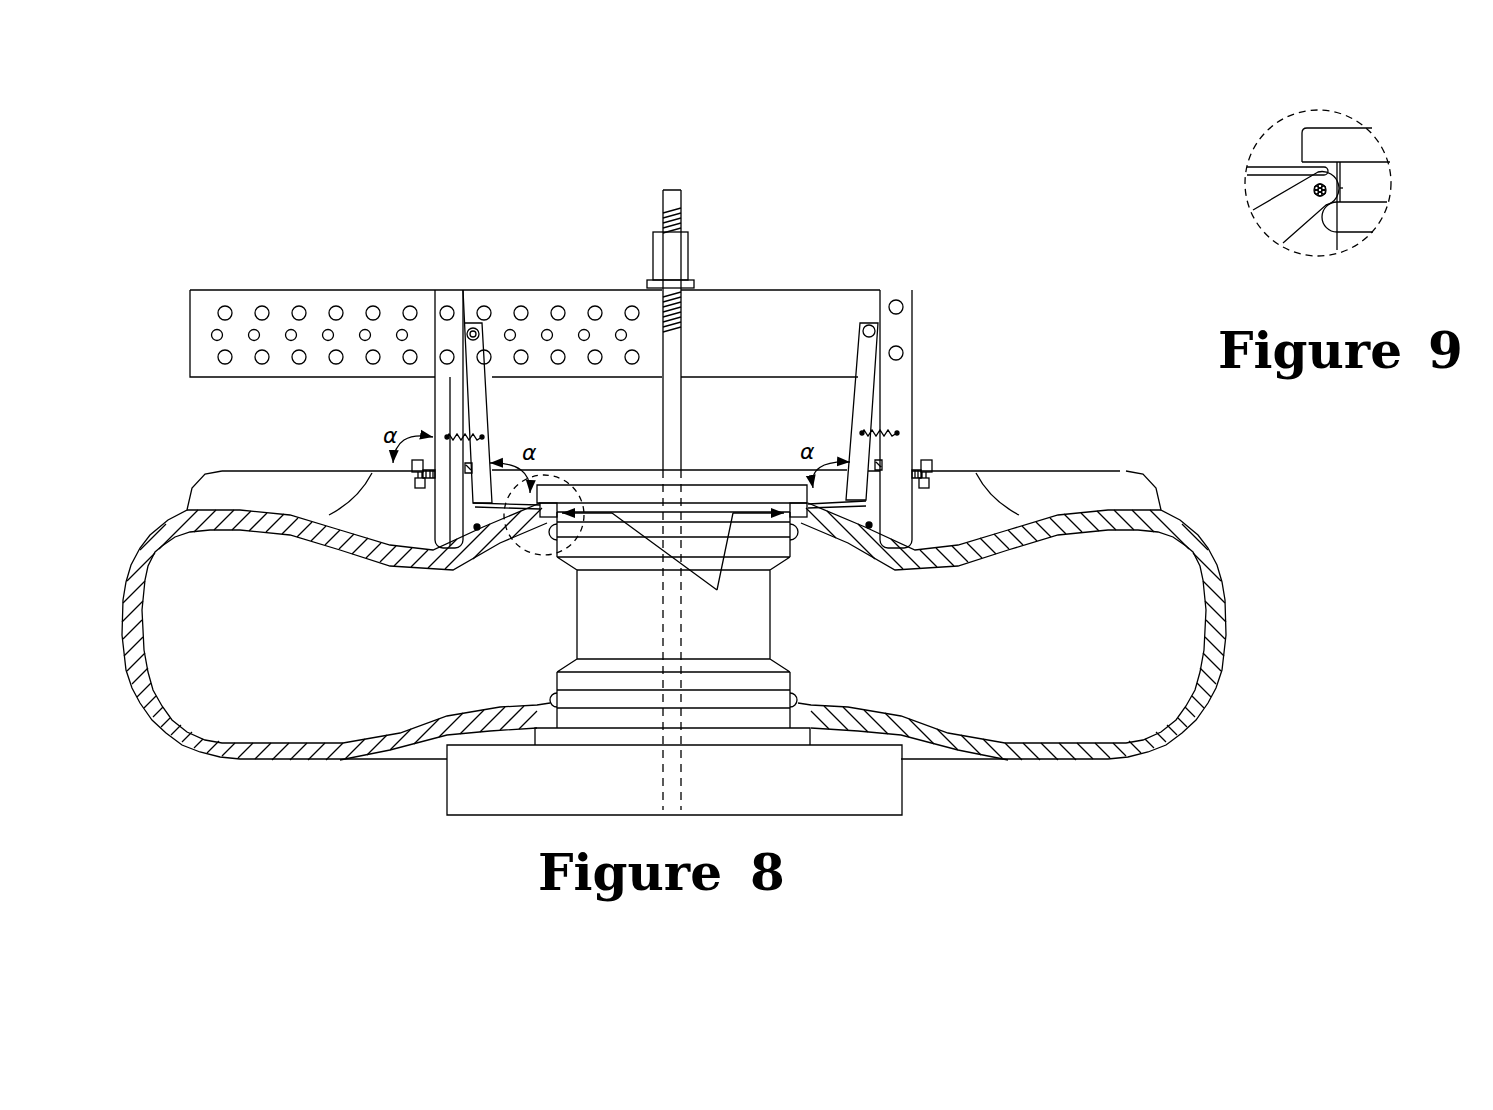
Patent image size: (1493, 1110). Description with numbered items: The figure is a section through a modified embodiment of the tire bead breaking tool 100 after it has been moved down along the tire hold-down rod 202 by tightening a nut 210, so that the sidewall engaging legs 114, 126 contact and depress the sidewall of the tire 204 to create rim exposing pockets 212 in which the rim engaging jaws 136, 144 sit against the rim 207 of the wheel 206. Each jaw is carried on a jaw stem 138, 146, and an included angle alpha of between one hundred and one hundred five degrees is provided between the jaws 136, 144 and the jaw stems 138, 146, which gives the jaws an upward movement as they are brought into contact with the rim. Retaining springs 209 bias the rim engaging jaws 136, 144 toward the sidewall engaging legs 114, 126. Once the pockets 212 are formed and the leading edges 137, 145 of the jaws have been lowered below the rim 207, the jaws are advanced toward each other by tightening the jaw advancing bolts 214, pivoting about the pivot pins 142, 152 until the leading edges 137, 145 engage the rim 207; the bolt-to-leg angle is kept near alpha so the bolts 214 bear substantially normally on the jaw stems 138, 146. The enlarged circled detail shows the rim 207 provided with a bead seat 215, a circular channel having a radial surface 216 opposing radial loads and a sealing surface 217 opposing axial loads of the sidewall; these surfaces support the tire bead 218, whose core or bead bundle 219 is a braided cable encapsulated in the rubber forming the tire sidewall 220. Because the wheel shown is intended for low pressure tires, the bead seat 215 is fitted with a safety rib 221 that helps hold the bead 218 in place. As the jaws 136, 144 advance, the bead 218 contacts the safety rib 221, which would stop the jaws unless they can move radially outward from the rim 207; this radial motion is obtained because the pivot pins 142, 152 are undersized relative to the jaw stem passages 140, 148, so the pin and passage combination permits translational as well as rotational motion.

In FIG. 8, the tire bead breaking tool 100 is at (587, 258).
In FIG. 8, the sidewall engaging leg 114 is at (891, 422).
In FIG. 8, the sidewall engaging leg 126 is at (443, 405).
In FIG. 8, the rim engaging jaw 136 is at (843, 517).
In FIG. 8, the leading edge 137 is at (773, 470).
In FIG. 8, the jaw stem 138 is at (868, 397).
In FIG. 8, the jaw stem passage 140 is at (864, 328).
In FIG. 8, the pivot pin 142 is at (910, 327).
In FIG. 8, the rim engaging jaw 144 is at (471, 505).
In FIG. 9, the leading edge 145 is at (1330, 175).
In FIG. 8, the jaw stem 146 is at (477, 392).
In FIG. 8, the jaw stem passage 148 is at (469, 328).
In FIG. 8, the pivot pin 152 is at (477, 331).
In FIG. 8, the tire hold-down rod 202 is at (673, 200).
In FIG. 8, the tire 204 is at (1165, 498).
In FIG. 8, the wheel 206 is at (573, 638).
In FIG. 8, the rim 207 is at (722, 468).
In FIG. 8, the retaining spring 209 is at (483, 435).
In FIG. 8, the nut 210 is at (683, 255).
In FIG. 8, the rim exposing pocket 212 is at (475, 529).
In FIG. 8, the jaw advancing bolt 214 is at (412, 474).
In FIG. 8, the bead seat 215 is at (673, 565).
In FIG. 9, the bead seat 215 is at (1350, 189).
In FIG. 9, the radial surface 216 is at (1342, 177).
In FIG. 8, the sealing surface 217 is at (540, 500).
In FIG. 9, the sealing surface 217 is at (1317, 160).
In FIG. 8, the tire bead 218 is at (540, 519).
In FIG. 9, the tire bead 218 is at (1292, 182).
In FIG. 9, the bead bundle 219 is at (1338, 172).
In FIG. 9, the tire sidewall 220 is at (1297, 212).
In FIG. 8, the safety rib 221 is at (556, 536).
In FIG. 9, the safety rib 221 is at (1336, 218).